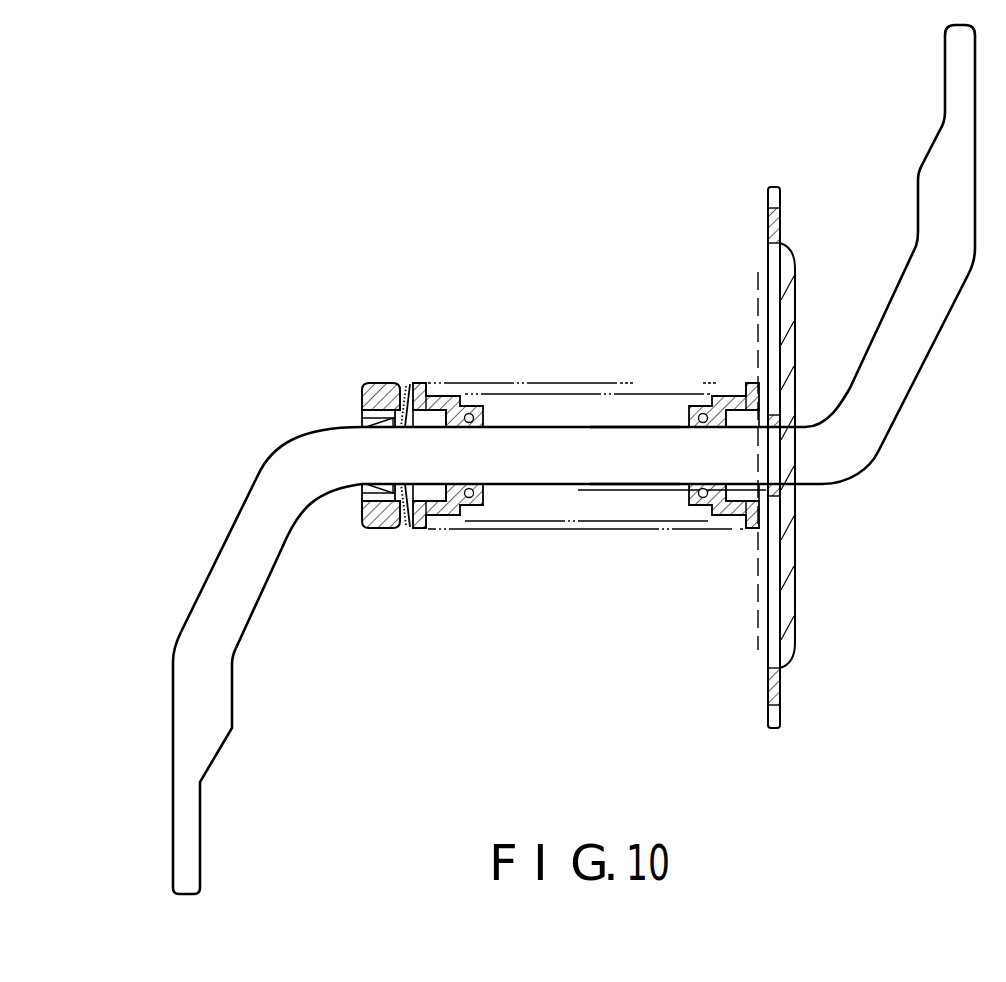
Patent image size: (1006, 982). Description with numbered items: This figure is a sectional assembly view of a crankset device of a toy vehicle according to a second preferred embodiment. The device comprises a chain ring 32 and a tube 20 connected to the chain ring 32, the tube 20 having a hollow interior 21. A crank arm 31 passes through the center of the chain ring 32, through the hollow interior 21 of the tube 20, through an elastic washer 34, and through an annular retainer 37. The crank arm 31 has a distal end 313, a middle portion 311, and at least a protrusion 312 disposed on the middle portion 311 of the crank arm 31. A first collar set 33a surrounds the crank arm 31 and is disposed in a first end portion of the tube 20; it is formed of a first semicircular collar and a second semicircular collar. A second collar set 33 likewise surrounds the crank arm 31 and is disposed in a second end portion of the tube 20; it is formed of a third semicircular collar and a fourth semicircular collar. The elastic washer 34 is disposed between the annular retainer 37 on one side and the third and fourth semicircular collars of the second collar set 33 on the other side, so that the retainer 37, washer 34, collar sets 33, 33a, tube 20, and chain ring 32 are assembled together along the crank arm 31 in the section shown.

The tube 20 is at (488, 384).
The hollow interior 21 is at (612, 400).
The crank arm 31 is at (577, 490).
The middle portion 311 is at (627, 457).
The protrusion 312 is at (355, 497).
The distal end 313 is at (188, 855).
The chain ring 32 is at (768, 187).
The second collar set 33 is at (438, 382).
The first collar set 33a is at (722, 386).
The elastic washer 34 is at (404, 382).
The annular retainer 37 is at (370, 382).